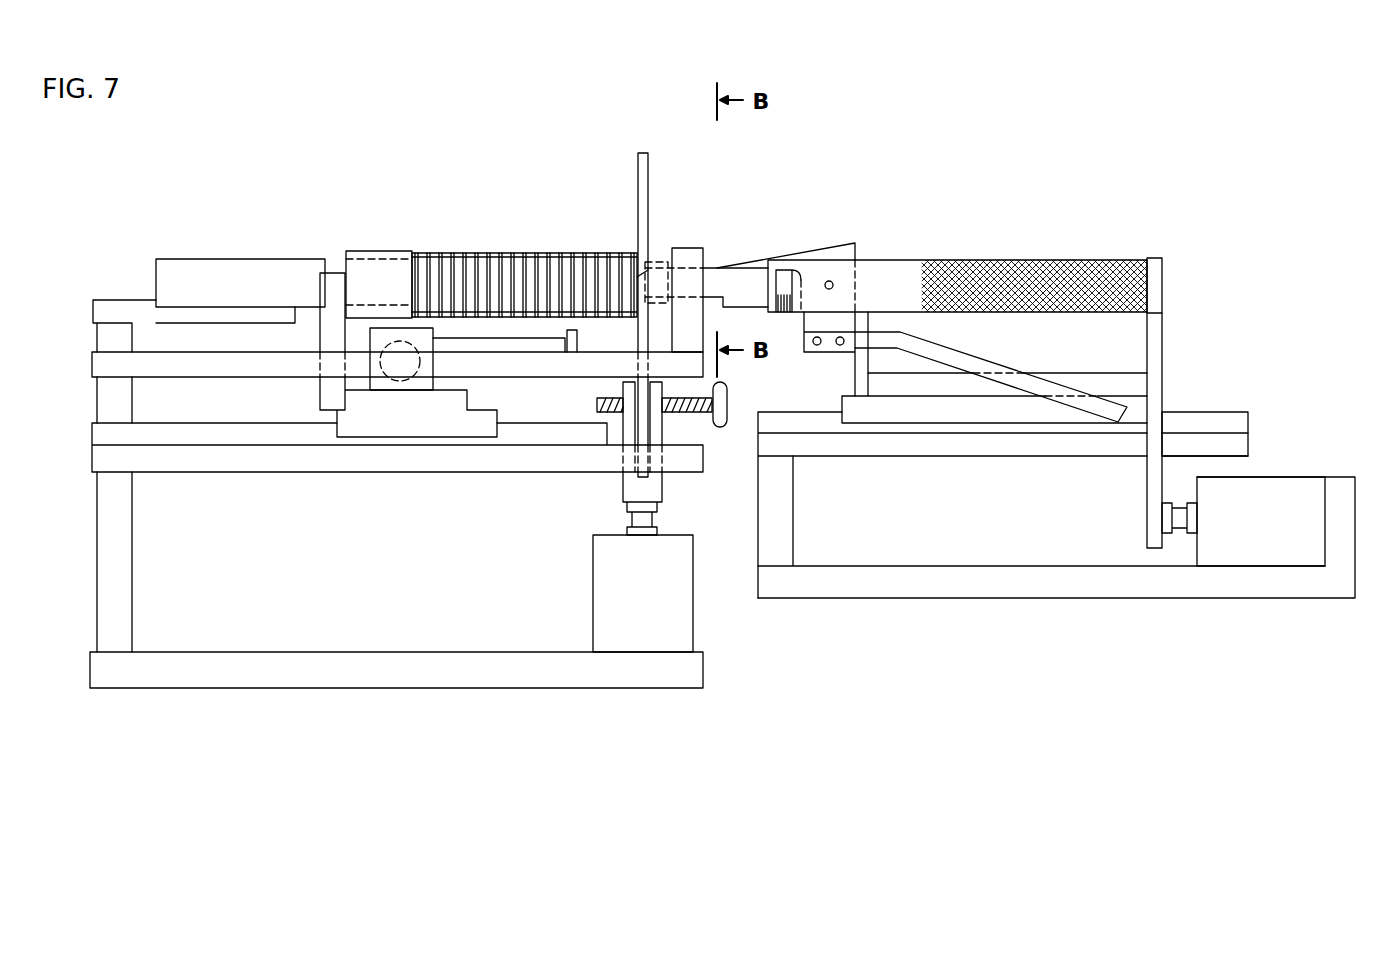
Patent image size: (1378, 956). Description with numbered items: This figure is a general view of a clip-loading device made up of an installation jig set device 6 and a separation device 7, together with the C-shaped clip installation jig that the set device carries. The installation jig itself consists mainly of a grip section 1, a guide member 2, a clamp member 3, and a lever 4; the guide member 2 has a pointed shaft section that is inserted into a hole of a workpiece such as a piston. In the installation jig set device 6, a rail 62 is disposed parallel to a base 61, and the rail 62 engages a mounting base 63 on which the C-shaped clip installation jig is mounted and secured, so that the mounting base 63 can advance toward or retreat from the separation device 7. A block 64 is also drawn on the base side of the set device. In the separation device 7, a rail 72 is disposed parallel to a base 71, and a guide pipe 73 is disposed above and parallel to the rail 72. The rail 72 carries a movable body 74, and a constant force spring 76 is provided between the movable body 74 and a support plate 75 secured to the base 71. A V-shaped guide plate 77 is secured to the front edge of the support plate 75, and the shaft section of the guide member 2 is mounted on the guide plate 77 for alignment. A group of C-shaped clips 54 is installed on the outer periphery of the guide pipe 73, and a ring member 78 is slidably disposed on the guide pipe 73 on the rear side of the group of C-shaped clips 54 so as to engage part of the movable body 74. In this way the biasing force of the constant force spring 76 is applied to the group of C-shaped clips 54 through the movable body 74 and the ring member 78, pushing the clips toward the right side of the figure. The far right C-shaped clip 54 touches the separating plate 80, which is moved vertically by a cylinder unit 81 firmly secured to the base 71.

The grip section 1 is at (990, 278).
The guide member 2 is at (717, 266).
The clamp member 3 is at (831, 252).
The lever 4 is at (990, 370).
The installation jig set device 6 is at (1209, 359).
The separation device 7 is at (167, 243).
The C-shaped clip 54 is at (578, 252).
The base 61 is at (978, 588).
The rail 62 is at (1228, 415).
The mounting base 63 is at (1083, 380).
The block 64 is at (1297, 490).
The base 71 is at (233, 658).
The rail 72 is at (233, 430).
The guide pipe 73 is at (262, 259).
The movable body 74 is at (427, 405).
The support plate 75 is at (292, 368).
The constant force spring 76 is at (420, 357).
The V-shaped guide plate 77 is at (688, 257).
The ring member 78 is at (372, 256).
The separating plate 80 is at (645, 168).
The cylinder unit 81 is at (605, 602).